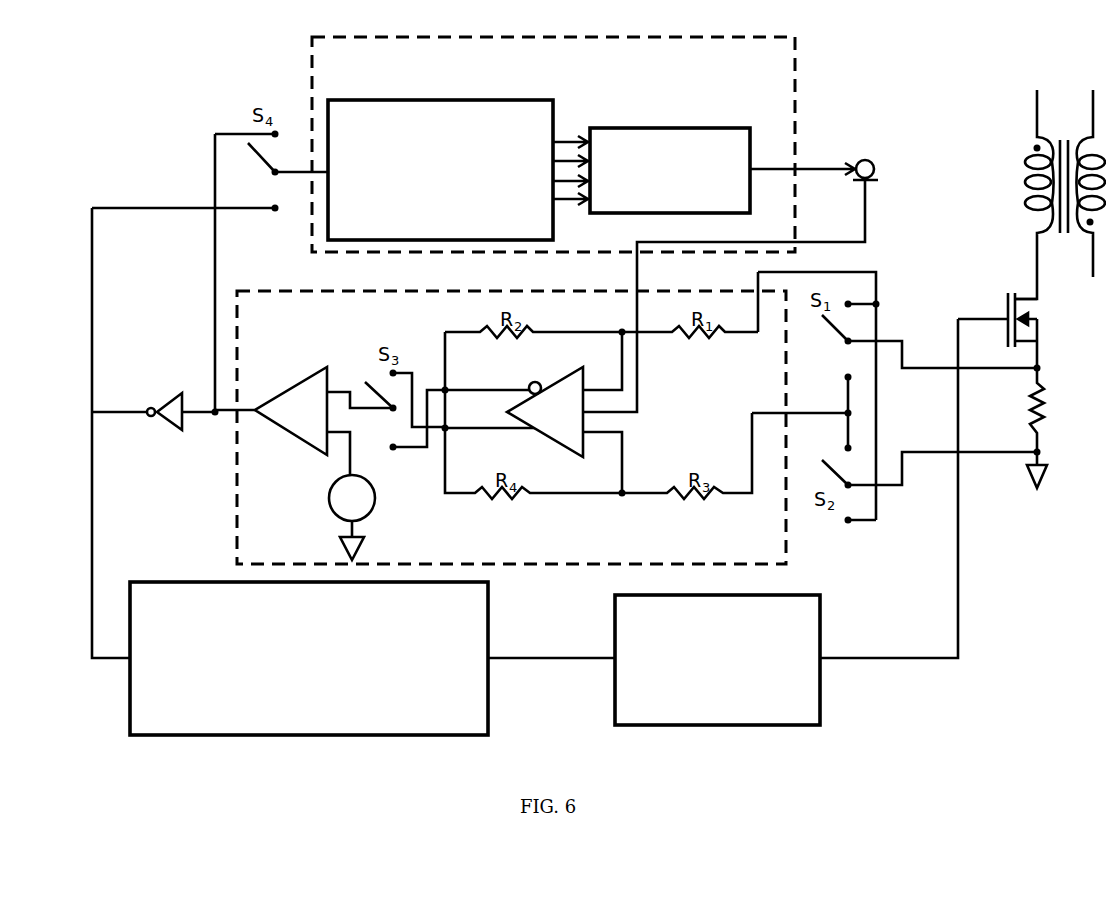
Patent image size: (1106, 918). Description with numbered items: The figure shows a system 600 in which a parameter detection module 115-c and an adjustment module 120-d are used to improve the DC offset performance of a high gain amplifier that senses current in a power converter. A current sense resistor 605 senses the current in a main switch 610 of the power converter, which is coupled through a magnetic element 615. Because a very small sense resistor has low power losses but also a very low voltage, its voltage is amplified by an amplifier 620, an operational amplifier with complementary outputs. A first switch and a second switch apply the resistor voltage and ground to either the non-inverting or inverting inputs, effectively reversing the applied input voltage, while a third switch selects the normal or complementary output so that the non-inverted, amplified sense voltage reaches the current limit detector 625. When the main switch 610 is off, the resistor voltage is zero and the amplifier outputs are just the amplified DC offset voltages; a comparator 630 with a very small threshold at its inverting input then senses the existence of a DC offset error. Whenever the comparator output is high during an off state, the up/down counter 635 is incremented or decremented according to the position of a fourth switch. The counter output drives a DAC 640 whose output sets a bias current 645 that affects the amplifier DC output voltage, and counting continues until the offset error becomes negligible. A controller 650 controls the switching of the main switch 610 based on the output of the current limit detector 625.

The system 600 is at (883, 762).
The current sense resistor 605 is at (1040, 426).
The main switch 610 is at (1006, 306).
The magnetic element 615 is at (1090, 133).
The amplifier 620 is at (542, 382).
The current limit detector 625 is at (222, 582).
The comparator 630 is at (295, 385).
The up/down counter 635 is at (452, 100).
The DAC 640 is at (703, 128).
The bias current 645 is at (860, 160).
The controller 650 is at (680, 595).
The parameter detection module 115-c is at (306, 291).
The adjustment module 120-d is at (312, 84).